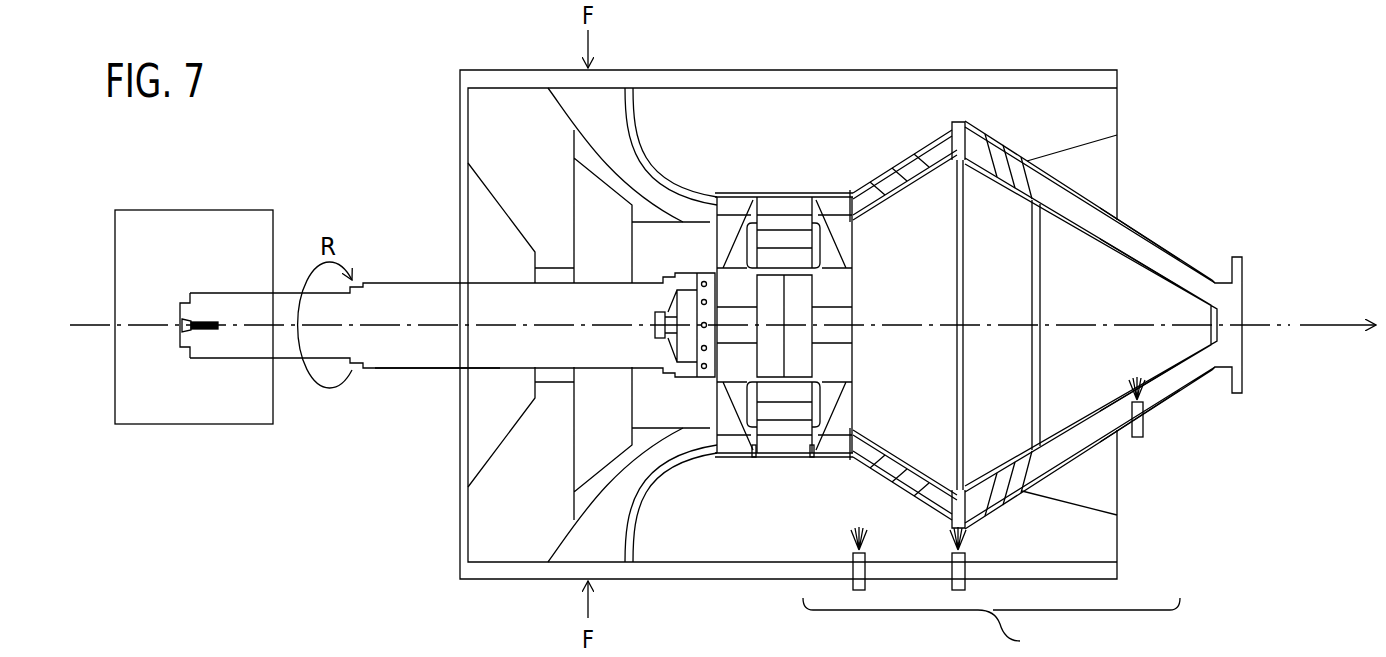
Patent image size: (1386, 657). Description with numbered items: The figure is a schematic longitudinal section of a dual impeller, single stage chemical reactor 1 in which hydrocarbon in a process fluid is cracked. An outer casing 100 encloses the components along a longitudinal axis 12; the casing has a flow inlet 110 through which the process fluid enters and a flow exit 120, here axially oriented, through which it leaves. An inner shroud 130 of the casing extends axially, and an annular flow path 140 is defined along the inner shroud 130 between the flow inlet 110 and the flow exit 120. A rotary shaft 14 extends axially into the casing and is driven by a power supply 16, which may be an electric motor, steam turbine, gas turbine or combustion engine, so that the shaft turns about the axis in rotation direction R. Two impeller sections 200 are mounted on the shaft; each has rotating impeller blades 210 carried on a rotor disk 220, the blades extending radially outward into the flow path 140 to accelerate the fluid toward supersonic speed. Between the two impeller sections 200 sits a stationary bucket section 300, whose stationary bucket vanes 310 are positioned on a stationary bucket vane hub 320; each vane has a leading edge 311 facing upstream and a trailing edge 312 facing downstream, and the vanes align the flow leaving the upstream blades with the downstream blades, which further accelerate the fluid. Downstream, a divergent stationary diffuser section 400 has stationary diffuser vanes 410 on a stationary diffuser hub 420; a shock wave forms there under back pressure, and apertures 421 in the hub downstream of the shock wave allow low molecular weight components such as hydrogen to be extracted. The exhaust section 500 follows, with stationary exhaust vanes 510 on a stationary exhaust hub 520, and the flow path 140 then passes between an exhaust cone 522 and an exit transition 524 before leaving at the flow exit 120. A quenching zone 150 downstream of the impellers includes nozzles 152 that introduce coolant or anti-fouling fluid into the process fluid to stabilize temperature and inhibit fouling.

The power generation system 1 is at (1315, 103).
The longitudinal axis 12 is at (418, 325).
The rotary shaft 14 is at (433, 368).
The power supply 16 is at (193, 210).
The outer casing 100 is at (790, 70).
The flow inlet 110 is at (572, 69).
The flow exit 120 is at (1249, 301).
The inner shroud 130 is at (916, 146).
The flow path 140 is at (695, 205).
The quenching zone 150 is at (991, 626).
The nozzle 152 is at (1168, 442).
The impeller section 200 is at (736, 191).
The rotating impeller blade 210 is at (737, 210).
The rotor disk 220 is at (830, 296).
The stationary bucket section 300 is at (783, 191).
The stationary bucket vane 310 is at (780, 442).
The leading edge 311 is at (753, 457).
The trailing edge 312 is at (813, 457).
The stationary bucket vane hub 320 is at (783, 408).
The stationary diffuser section 400 is at (938, 133).
The stationary diffuser vane 410 is at (892, 183).
The stationary diffuser hub 420 is at (912, 380).
The aperture 421 is at (928, 182).
The exhaust section 500 is at (994, 141).
The stationary exhaust vane 510 is at (1010, 177).
The stationary exhaust hub 520 is at (1007, 287).
The exhaust cone 522 is at (1148, 355).
The exit transition 524 is at (1140, 230).